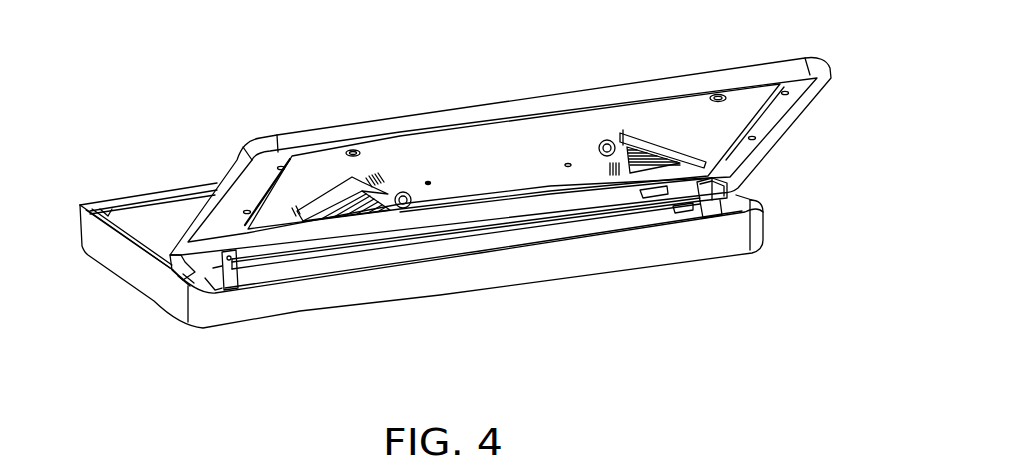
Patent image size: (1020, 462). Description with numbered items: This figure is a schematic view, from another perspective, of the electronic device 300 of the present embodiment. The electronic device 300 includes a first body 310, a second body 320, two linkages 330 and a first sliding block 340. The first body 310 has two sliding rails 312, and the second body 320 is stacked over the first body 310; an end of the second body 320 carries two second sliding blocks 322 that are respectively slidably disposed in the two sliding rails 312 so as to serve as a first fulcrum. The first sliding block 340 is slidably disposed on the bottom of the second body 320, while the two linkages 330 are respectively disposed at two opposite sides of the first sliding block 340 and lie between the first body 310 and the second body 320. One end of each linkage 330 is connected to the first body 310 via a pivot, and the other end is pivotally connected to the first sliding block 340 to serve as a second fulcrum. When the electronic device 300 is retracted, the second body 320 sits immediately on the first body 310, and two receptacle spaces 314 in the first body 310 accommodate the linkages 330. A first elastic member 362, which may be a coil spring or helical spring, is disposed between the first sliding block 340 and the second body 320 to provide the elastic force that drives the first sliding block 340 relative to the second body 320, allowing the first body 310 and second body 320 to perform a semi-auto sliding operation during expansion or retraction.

The electronic device 300 is at (455, 197).
The first body 310 is at (122, 258).
The sliding rails 312 is at (108, 200).
The receptacle spaces 314 is at (212, 288).
The second body 320 is at (665, 88).
The second sliding blocks 322 is at (172, 275).
The linkages 330 is at (232, 273).
The first sliding block 340 is at (600, 185).
The first elastic member 362 is at (323, 200).